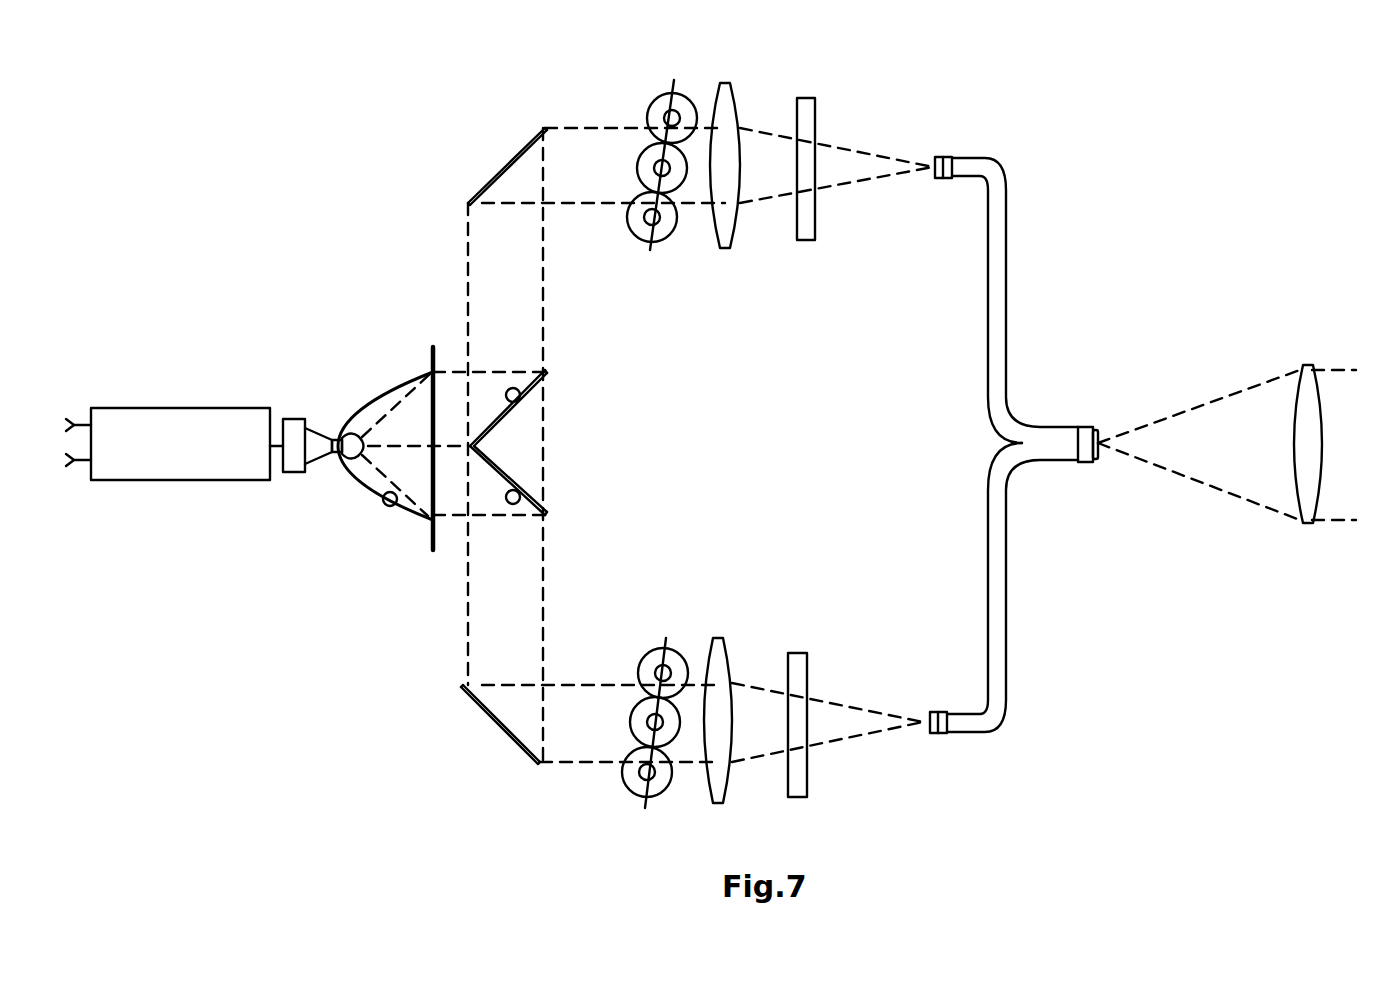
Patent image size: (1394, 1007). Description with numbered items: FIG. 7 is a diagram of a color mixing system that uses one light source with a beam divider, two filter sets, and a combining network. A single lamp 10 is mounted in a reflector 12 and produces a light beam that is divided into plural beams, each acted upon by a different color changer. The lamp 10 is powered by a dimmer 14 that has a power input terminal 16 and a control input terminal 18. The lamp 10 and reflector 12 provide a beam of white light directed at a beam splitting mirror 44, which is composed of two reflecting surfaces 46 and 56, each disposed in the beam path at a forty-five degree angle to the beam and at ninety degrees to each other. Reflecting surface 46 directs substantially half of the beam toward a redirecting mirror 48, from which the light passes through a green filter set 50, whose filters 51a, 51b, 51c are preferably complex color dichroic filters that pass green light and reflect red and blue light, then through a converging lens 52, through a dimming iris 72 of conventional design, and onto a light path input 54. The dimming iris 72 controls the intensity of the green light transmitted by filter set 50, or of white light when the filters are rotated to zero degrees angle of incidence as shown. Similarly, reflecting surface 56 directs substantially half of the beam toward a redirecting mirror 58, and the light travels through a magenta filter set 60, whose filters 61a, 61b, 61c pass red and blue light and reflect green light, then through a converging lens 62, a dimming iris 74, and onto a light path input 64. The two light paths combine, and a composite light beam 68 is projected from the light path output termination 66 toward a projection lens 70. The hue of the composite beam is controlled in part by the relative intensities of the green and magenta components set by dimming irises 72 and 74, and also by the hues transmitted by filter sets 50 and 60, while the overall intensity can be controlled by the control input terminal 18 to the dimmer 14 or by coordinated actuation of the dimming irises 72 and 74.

The lamp 10 is at (358, 478).
The reflector 12 is at (395, 505).
The dimmer 14 is at (183, 408).
The power input terminal 16 is at (86, 460).
The control input terminal 18 is at (86, 425).
The beam splitting mirror 44 is at (528, 445).
The reflecting surface 46 is at (530, 398).
The reflecting surface 56 is at (530, 494).
The redirecting mirror 48 is at (482, 200).
The redirecting mirror 58 is at (482, 697).
The green filter set 50 is at (676, 62).
The filter 51a is at (670, 94).
The filter 51b is at (660, 148).
The filter 51c is at (650, 228).
The converging lens 52 is at (729, 82).
The dimming iris 72 is at (808, 98).
The light path input 54 is at (945, 157).
The magenta filter set 60 is at (665, 620).
The filter 61a is at (662, 648).
The filter 61b is at (650, 700).
The filter 61c is at (645, 792).
The converging lens 62 is at (720, 637).
The dimming iris 74 is at (800, 653).
The light path input 64 is at (938, 712).
The light path output termination 66 is at (1086, 427).
The composite light beam 68 is at (1220, 490).
The projection lens 70 is at (1292, 445).